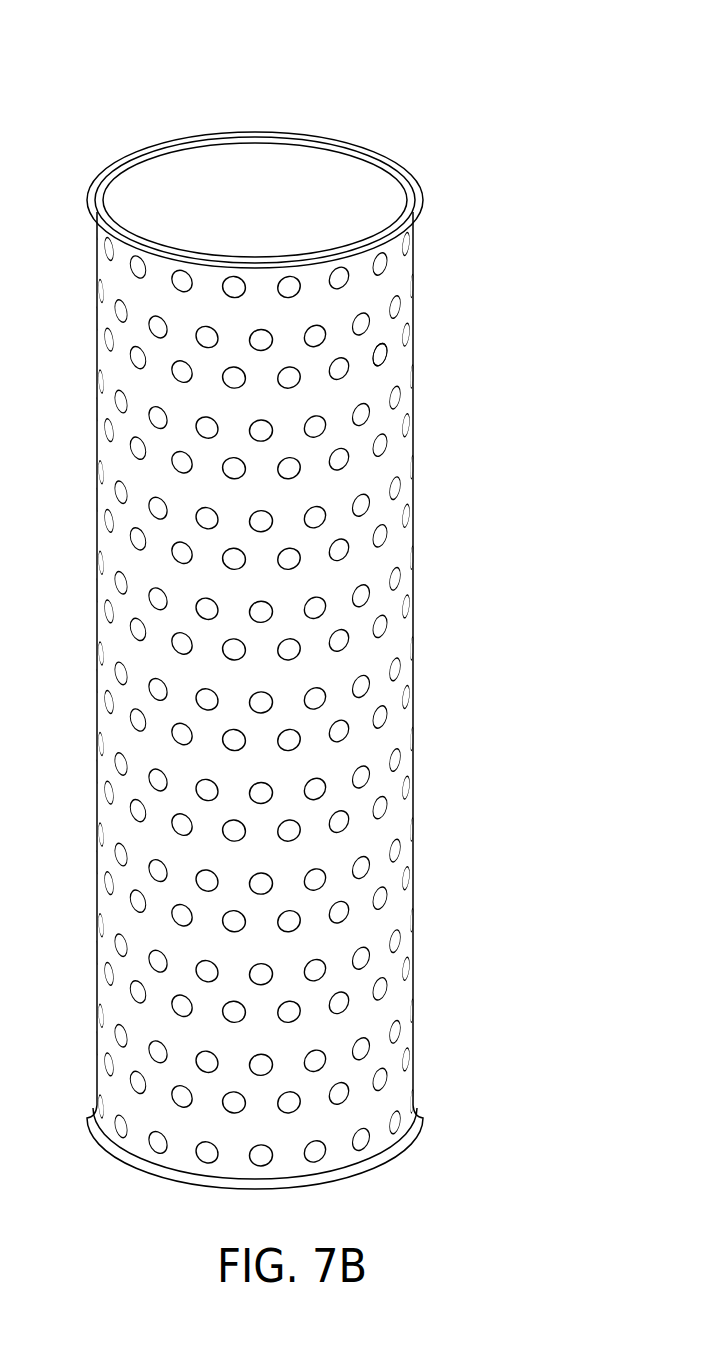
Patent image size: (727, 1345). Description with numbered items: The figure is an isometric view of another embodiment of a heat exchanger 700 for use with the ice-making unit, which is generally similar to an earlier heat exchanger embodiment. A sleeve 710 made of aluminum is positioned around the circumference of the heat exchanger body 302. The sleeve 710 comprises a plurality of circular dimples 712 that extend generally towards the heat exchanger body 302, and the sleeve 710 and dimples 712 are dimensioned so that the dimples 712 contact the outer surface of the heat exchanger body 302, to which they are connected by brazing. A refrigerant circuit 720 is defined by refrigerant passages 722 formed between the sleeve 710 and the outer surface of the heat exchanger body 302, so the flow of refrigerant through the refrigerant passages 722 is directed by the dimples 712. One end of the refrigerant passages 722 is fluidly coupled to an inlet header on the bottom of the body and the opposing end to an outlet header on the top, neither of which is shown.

The heat exchanger 700 is at (522, 110).
The heat exchanger body 302 is at (180, 158).
The refrigerant circuit 720 is at (374, 162).
The refrigerant passages 722 is at (222, 257).
The sleeve 710 is at (397, 263).
The circular dimples 712 is at (385, 356).